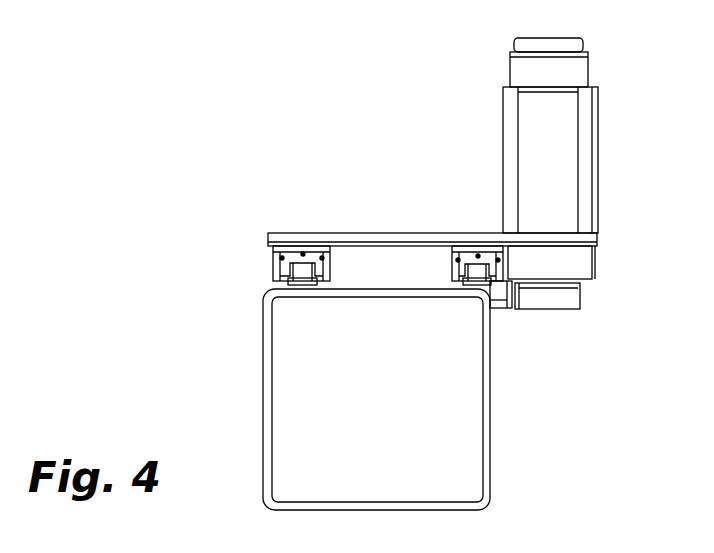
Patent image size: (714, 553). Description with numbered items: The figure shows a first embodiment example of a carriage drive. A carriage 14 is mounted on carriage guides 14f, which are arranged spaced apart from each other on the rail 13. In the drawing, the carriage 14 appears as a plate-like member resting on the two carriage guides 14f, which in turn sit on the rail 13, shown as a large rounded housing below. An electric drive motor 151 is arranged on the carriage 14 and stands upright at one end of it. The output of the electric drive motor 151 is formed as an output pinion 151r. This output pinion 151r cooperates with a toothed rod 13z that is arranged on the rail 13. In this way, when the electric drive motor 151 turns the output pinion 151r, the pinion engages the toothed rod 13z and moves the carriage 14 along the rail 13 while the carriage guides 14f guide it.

The rail 13 is at (262, 362).
The toothed rod 13z is at (496, 284).
The carriage 14 is at (366, 211).
The carriage guides 14f is at (262, 250).
The electric drive motor 151 is at (495, 89).
The output pinion 151r is at (578, 285).